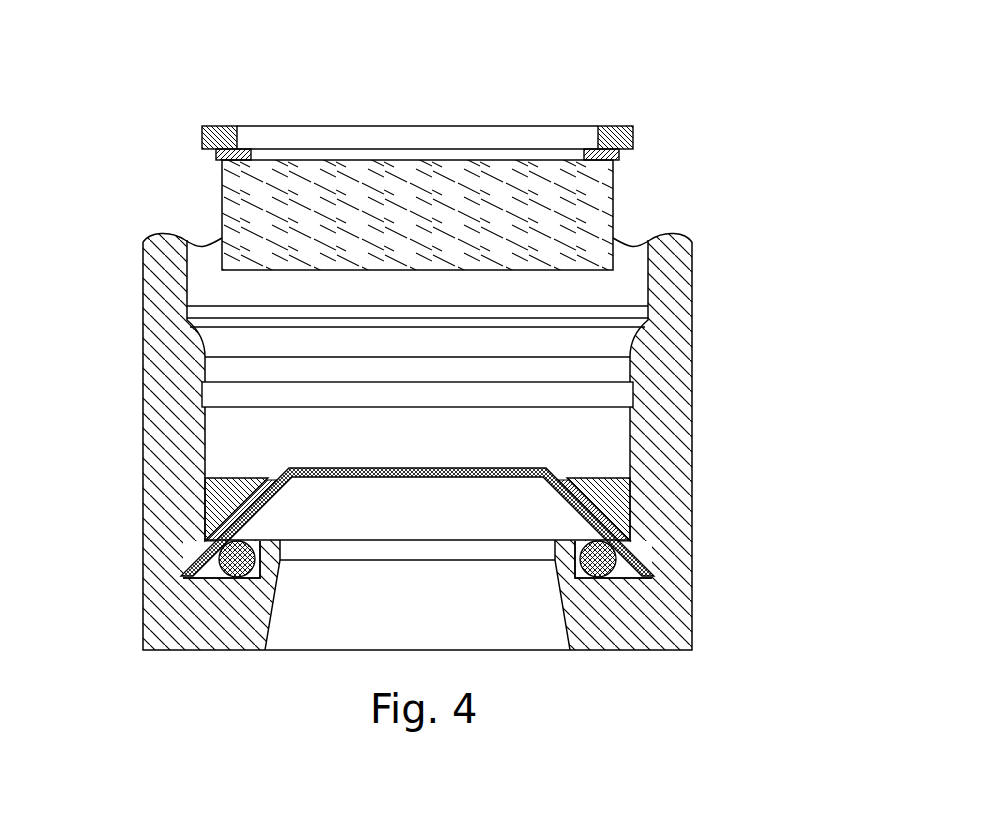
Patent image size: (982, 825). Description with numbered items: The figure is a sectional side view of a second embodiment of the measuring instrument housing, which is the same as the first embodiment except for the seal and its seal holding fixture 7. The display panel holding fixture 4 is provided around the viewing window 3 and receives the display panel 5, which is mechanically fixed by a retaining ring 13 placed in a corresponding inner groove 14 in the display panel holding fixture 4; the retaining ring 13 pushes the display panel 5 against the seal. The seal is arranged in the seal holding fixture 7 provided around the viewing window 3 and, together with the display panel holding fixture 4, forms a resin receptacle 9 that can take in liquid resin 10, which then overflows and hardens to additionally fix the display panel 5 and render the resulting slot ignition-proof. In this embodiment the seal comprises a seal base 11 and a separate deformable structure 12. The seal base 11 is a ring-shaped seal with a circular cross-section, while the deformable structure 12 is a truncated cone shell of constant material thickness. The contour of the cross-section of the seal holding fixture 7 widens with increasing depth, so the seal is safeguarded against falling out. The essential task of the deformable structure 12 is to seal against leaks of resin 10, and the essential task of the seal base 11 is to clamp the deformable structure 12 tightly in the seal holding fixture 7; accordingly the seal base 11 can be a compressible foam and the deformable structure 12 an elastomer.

The viewing window 3 is at (292, 680).
The display panel holding fixture 4 is at (731, 211).
The display panel 5 is at (330, 185).
The seal holding fixture 7 is at (210, 572).
The resin receptacle 9 is at (224, 486).
The resin 10 is at (235, 515).
The seal base 11 is at (233, 573).
The deformable structure 12 is at (207, 552).
The retaining ring 13 is at (206, 136).
The inner groove 14 is at (210, 390).